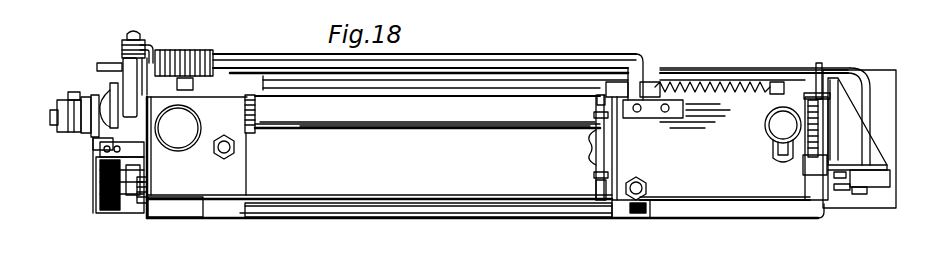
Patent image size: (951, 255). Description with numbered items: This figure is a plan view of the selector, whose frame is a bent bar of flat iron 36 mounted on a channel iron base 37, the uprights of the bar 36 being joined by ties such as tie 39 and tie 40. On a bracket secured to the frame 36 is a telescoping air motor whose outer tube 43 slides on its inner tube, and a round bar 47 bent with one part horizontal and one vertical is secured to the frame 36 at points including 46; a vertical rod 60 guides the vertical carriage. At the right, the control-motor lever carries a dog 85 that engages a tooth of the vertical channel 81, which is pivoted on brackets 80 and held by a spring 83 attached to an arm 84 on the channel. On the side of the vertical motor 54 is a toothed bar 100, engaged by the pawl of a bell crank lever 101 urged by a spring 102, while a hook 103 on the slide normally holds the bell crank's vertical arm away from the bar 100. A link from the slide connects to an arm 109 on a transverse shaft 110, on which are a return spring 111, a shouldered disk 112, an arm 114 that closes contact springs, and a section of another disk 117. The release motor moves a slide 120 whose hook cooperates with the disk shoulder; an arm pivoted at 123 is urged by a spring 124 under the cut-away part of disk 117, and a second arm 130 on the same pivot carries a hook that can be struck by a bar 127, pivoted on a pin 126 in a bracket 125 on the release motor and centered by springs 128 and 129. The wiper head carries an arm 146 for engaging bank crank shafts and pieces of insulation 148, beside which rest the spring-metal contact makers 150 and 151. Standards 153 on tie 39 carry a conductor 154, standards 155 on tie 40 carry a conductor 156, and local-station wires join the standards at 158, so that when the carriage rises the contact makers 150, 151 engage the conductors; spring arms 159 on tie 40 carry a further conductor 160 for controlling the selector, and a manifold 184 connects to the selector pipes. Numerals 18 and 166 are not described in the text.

The knob shaft 18 is at (70, 122).
The bar of flat iron 36 is at (508, 143).
The channel iron base 37 is at (884, 124).
The tie 39 is at (508, 215).
The tie 40 is at (740, 82).
The outer tube 43 is at (180, 134).
The securing point 46 is at (232, 147).
The round bar 47 is at (229, 150).
The vertical motor 54 is at (780, 124).
The vertical rod 60 is at (646, 186).
The brackets 80 is at (845, 180).
The vertical channel 81 is at (850, 190).
The spring 83 is at (772, 82).
The arm 84 is at (835, 95).
The dog 85 is at (868, 196).
The toothed bar 100 is at (805, 162).
The bell crank lever 101 is at (862, 160).
The spring 102 is at (845, 120).
The hook 103 is at (890, 178).
The arm 109 is at (860, 100).
The transverse shaft 110 is at (700, 73).
The spring 111 is at (165, 51).
The disk 112 is at (128, 90).
The arm 114 is at (124, 78).
The section of disk 117 is at (110, 90).
The slide 120 is at (108, 70).
The pivot 123 is at (84, 160).
The spring 124 is at (96, 165).
The plate or bracket 125 is at (80, 133).
The pin 126 is at (50, 118).
The bar 127 is at (60, 112).
The spring 128 is at (68, 96).
The spring 129 is at (72, 124).
The arm 130 is at (88, 143).
The arm 146 is at (588, 150).
The pieces of insulation 148 is at (594, 115).
The contact maker 150 is at (595, 105).
The contact maker 151 is at (594, 193).
The standards 153 is at (250, 198).
The conductor 154 is at (358, 205).
The standards 155 is at (190, 88).
The conductor 156 is at (412, 96).
The wire connections 158 is at (630, 215).
The spring arms 159 is at (255, 105).
The conductor 160 is at (483, 128).
The bracket 166 is at (648, 82).
The manifold 184 is at (560, 67).